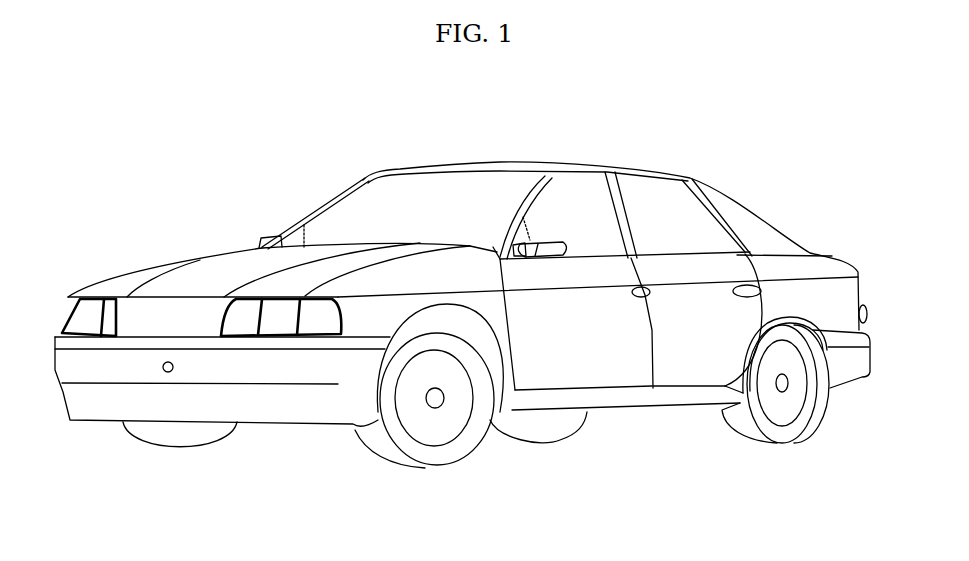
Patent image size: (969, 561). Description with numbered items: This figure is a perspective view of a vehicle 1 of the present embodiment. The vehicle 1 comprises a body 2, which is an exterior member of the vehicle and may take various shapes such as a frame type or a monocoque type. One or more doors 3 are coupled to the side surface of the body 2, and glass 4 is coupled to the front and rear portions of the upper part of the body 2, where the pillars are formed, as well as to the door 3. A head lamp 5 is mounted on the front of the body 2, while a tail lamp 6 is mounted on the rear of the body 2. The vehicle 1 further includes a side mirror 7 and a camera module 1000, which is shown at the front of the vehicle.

The vehicle 1 is at (152, 128).
The body 2 is at (218, 272).
The door 3 is at (602, 370).
The glass 4 is at (352, 213).
The head lamp 5 is at (325, 316).
The tail lamp 6 is at (866, 308).
The side mirror 7 is at (553, 244).
The camera module 1000 is at (163, 363).